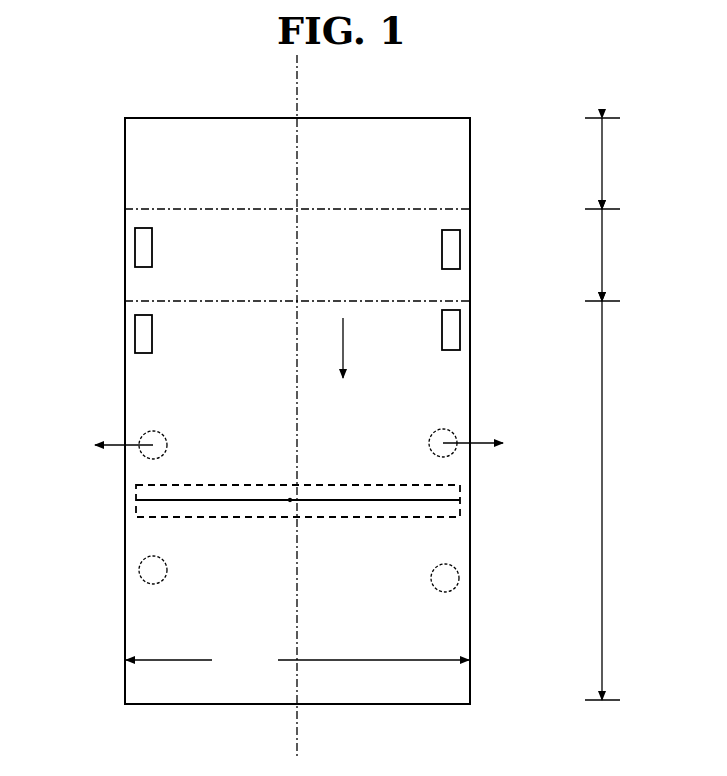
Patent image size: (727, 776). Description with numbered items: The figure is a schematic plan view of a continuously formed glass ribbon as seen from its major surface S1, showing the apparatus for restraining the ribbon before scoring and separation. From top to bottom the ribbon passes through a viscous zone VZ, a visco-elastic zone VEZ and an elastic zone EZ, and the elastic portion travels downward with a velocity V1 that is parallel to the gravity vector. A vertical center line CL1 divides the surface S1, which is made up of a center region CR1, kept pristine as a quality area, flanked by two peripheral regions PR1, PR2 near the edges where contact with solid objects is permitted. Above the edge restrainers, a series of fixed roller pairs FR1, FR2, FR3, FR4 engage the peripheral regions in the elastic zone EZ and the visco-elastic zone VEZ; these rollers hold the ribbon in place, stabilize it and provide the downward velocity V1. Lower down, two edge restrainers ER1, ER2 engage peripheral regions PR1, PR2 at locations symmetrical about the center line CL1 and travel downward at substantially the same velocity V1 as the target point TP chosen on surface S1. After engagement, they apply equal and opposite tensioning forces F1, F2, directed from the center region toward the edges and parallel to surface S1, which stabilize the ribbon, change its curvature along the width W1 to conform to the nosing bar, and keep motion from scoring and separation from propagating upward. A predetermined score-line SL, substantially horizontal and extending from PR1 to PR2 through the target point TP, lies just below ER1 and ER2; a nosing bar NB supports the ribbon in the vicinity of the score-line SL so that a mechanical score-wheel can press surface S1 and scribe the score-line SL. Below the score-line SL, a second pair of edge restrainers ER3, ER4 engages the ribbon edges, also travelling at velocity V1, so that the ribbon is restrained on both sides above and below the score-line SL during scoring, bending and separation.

The center line CL1 is at (280, 406).
The viscous zone VZ is at (602, 163).
The visco-elastic zone VEZ is at (602, 255).
The elastic zone EZ is at (602, 500).
The width W1 is at (297, 662).
The downward velocity V1 is at (329, 348).
The fixed roller pair FR1 is at (145, 332).
The fixed roller pair FR2 is at (452, 327).
The fixed roller pair FR3 is at (145, 244).
The fixed roller pair FR4 is at (452, 244).
The peripheral region PR1 is at (149, 388).
The peripheral region PR2 is at (446, 390).
The major surface S1 is at (206, 338).
The center region CR1 is at (277, 397).
The edge restrainer ER1 is at (142, 436).
The edge restrainer ER2 is at (455, 434).
The edge restrainer ER3 is at (148, 567).
The edge restrainer ER4 is at (462, 576).
The tensioning force F1 is at (112, 447).
The tensioning force F2 is at (485, 444).
The nosing bar NB is at (420, 485).
The score-line SL is at (258, 490).
The target point TP is at (290, 498).